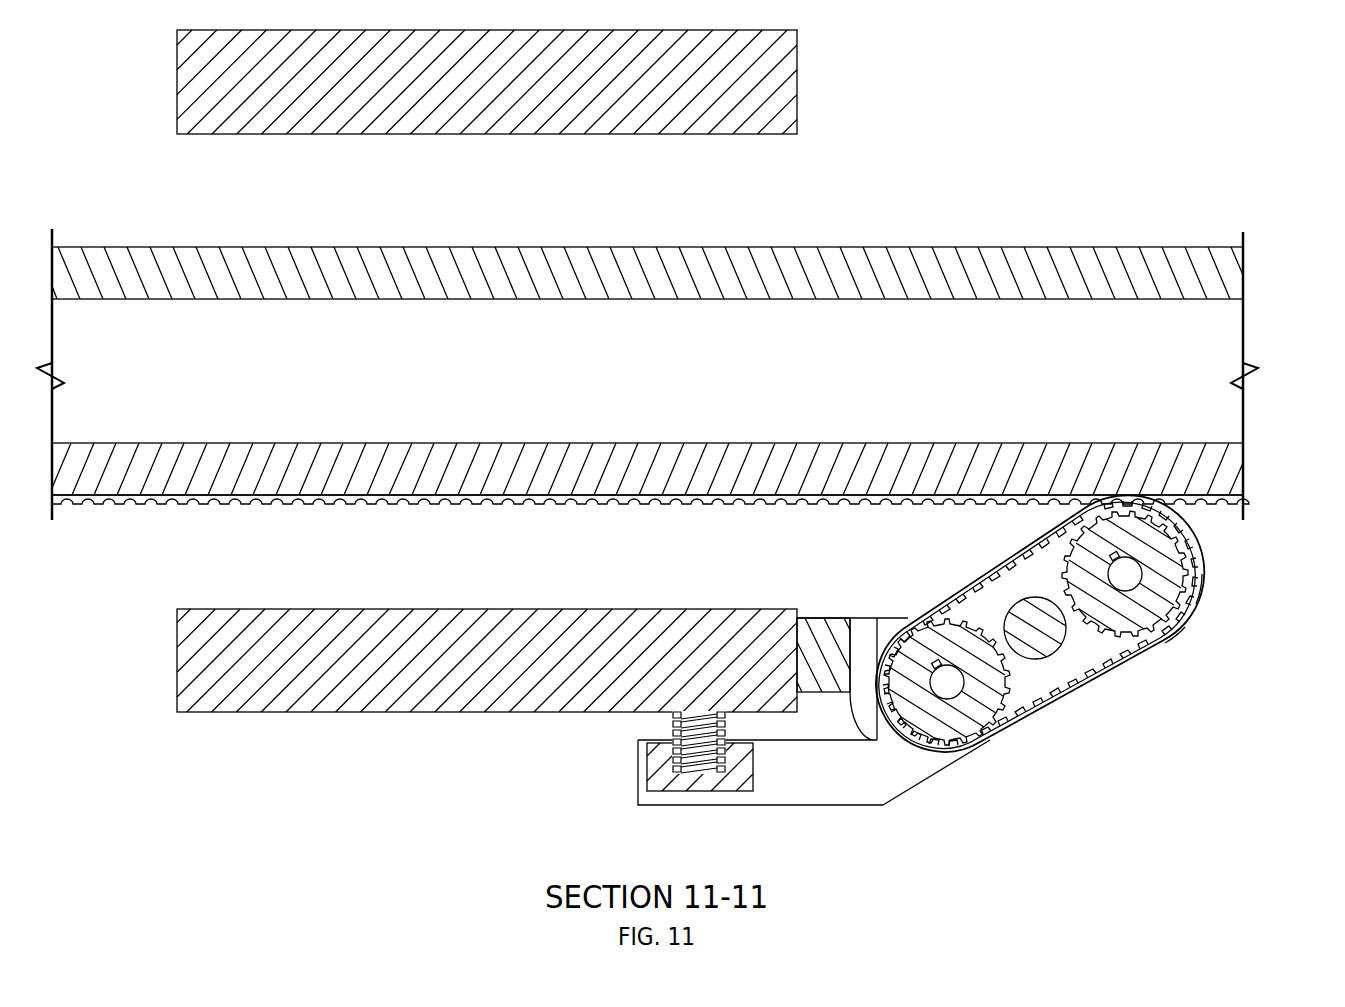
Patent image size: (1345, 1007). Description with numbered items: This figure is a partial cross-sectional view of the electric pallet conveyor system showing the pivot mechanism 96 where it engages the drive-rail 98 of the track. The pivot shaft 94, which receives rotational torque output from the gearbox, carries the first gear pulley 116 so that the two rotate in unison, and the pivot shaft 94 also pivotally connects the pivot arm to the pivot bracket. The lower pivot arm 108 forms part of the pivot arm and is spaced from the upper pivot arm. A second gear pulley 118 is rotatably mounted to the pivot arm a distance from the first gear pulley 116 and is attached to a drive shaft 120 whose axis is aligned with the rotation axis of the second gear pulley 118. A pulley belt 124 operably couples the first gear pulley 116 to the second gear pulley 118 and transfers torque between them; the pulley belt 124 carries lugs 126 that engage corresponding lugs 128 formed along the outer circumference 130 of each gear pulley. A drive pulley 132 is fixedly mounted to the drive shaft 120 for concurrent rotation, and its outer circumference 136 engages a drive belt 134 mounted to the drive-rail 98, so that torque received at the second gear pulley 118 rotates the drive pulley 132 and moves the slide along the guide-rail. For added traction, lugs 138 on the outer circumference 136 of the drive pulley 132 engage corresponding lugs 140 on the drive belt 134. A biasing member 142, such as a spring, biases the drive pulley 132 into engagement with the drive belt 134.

The pivot shaft 94 is at (953, 665).
The pivot mechanism 96 is at (903, 792).
The drive-rail 98 is at (632, 445).
The lower pivot arm 108 is at (793, 806).
The first gear pulley 116 is at (1003, 685).
The second gear pulley 118 is at (1148, 517).
The drive shaft 120 is at (1142, 572).
The pulley belt 124 is at (993, 730).
The lugs 126 is at (1036, 550).
The lugs 128 is at (973, 628).
The outer circumference 130 is at (910, 633).
The drive pulley 132 is at (1202, 593).
The drive belt 134 is at (640, 503).
The outer circumference 136 is at (1180, 557).
The lugs 138 is at (1172, 633).
The lugs 140 is at (743, 505).
The biasing member 142 is at (637, 742).